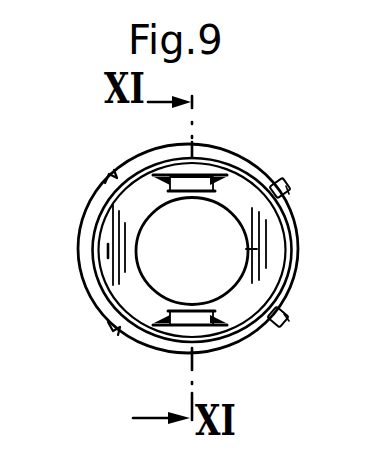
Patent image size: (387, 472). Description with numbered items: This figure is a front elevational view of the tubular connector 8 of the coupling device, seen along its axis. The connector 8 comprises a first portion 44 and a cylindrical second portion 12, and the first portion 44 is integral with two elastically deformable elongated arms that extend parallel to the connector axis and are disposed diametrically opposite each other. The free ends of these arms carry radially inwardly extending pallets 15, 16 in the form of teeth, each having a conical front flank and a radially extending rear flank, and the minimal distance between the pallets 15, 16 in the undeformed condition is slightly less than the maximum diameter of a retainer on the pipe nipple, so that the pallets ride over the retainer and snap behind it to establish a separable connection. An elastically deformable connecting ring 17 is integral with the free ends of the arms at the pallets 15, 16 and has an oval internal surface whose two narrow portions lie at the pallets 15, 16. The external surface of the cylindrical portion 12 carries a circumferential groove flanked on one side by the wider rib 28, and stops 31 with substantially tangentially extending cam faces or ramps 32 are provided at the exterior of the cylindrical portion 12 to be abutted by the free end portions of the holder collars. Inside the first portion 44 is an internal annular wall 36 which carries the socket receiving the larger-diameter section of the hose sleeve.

The tubular connector 8 is at (262, 157).
The cylindrical second portion 12 is at (262, 277).
The pallet 15 is at (213, 192).
The pallet 16 is at (198, 311).
The connecting ring 17 is at (267, 245).
The wider rib 28 is at (95, 199).
The stop 31 is at (296, 190).
The cam face or ramp 32 is at (285, 184).
The internal annular wall 36 is at (128, 242).
The first portion 44 is at (112, 177).